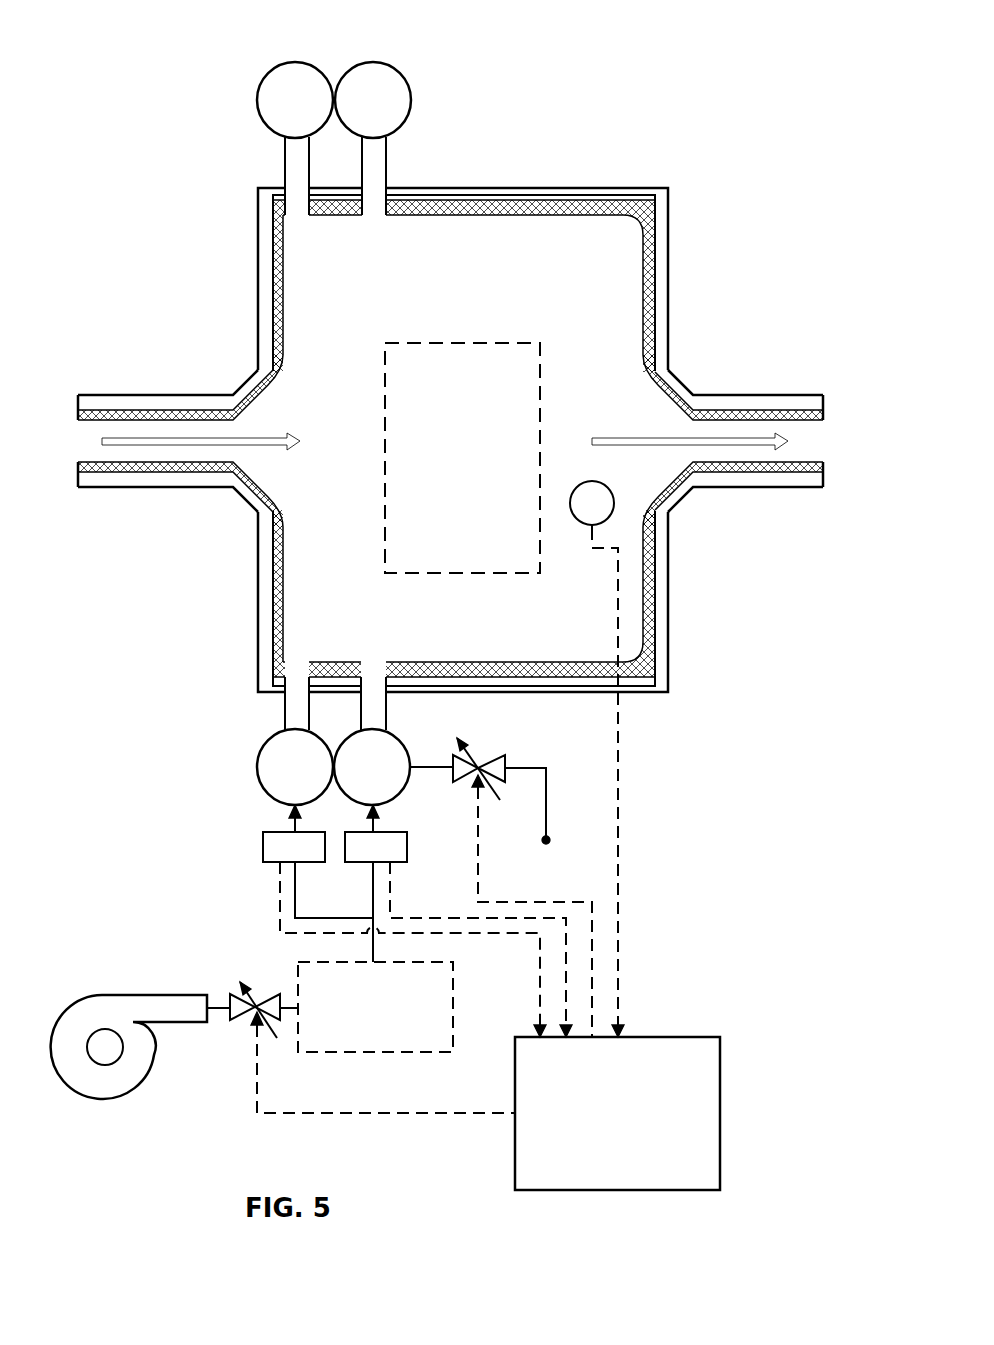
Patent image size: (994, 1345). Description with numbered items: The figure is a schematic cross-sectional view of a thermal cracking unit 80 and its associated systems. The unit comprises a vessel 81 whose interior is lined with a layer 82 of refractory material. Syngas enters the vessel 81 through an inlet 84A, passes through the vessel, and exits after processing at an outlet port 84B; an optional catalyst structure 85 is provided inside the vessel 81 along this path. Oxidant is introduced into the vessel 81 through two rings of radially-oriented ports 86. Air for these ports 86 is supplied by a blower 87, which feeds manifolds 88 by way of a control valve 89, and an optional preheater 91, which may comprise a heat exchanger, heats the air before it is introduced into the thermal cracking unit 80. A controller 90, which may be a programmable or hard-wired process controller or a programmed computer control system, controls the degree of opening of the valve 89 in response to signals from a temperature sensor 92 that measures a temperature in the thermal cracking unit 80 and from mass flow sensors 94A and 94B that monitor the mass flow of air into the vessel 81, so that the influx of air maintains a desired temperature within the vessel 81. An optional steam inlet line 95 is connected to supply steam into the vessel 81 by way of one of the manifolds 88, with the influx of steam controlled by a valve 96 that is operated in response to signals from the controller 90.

The thermal cracking unit 80 is at (180, 73).
The vessel 81 is at (498, 188).
The layer of refractory material 82 is at (565, 205).
The inlet 84A is at (268, 423).
The outlet port 84B is at (675, 425).
The catalyst structure 85 is at (438, 370).
The radially-oriented ports 86 is at (299, 205).
The blower 87 is at (125, 993).
The manifolds 88 is at (258, 773).
The control valve 89 is at (240, 982).
The controller 90 is at (660, 1037).
The preheater 91 is at (377, 1053).
The temperature sensor 92 is at (590, 483).
The mass flow sensor 94A is at (263, 850).
The mass flow sensor 94B is at (407, 848).
The steam inlet line 95 is at (546, 768).
The valve 96 is at (497, 760).